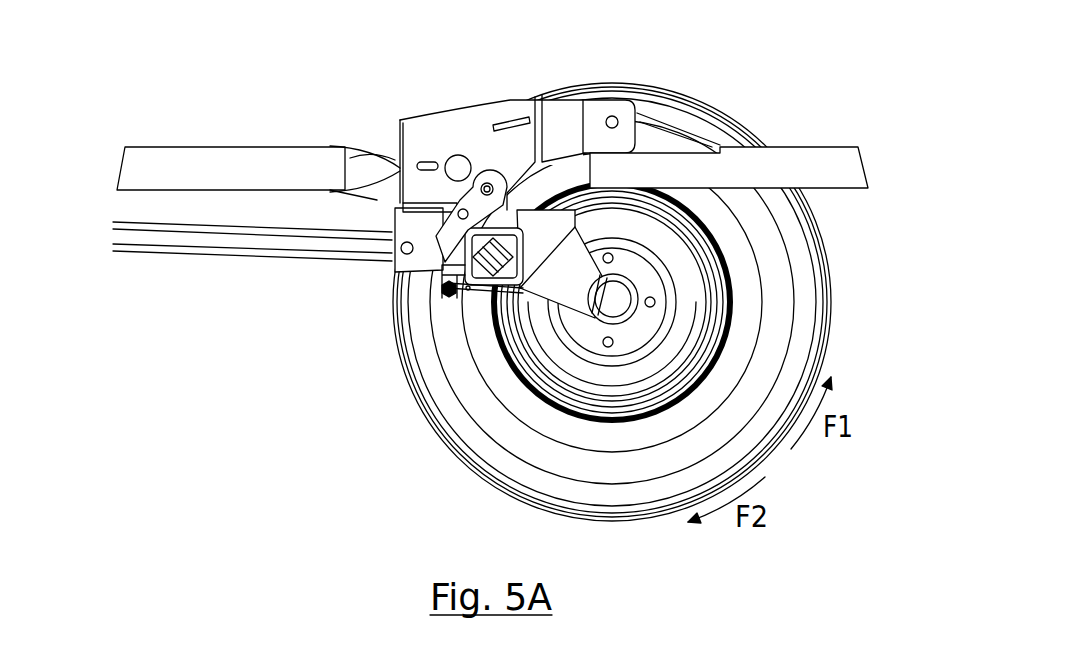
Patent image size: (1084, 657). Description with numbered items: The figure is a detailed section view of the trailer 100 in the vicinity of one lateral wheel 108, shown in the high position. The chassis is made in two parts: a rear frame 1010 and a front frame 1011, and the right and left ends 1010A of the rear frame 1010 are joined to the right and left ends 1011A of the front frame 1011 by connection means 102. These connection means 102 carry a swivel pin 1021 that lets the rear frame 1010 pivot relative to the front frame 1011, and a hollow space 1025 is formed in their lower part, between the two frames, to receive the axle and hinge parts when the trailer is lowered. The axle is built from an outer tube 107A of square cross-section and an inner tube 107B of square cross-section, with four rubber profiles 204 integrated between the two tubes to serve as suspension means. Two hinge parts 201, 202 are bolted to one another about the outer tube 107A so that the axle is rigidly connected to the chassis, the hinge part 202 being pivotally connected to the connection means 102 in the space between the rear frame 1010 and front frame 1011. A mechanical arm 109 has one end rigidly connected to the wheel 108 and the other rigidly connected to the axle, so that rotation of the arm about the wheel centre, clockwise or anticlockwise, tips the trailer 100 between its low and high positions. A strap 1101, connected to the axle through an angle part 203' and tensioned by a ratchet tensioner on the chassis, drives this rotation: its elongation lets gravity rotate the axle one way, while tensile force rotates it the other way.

The trailer 100 is at (838, 56).
The connection means 102 is at (471, 121).
The rear frame 1010 is at (847, 168).
The right and left ends of the rear frame 1010A is at (673, 167).
The front frame 1011 is at (136, 168).
The right and left ends of the front frame 1011A is at (350, 158).
The swivel pin 1021 is at (612, 116).
The hollow space 1025 is at (537, 160).
The outer tube 107A is at (447, 287).
The inner tube 107B is at (480, 207).
The wheel 108 is at (808, 300).
The mechanical arm 109 is at (553, 325).
The strap 1101 is at (143, 248).
The hinge part 201 is at (548, 233).
The hinge part 202 is at (450, 228).
The angle part 203' is at (376, 138).
The rubber profiles 204 is at (468, 288).